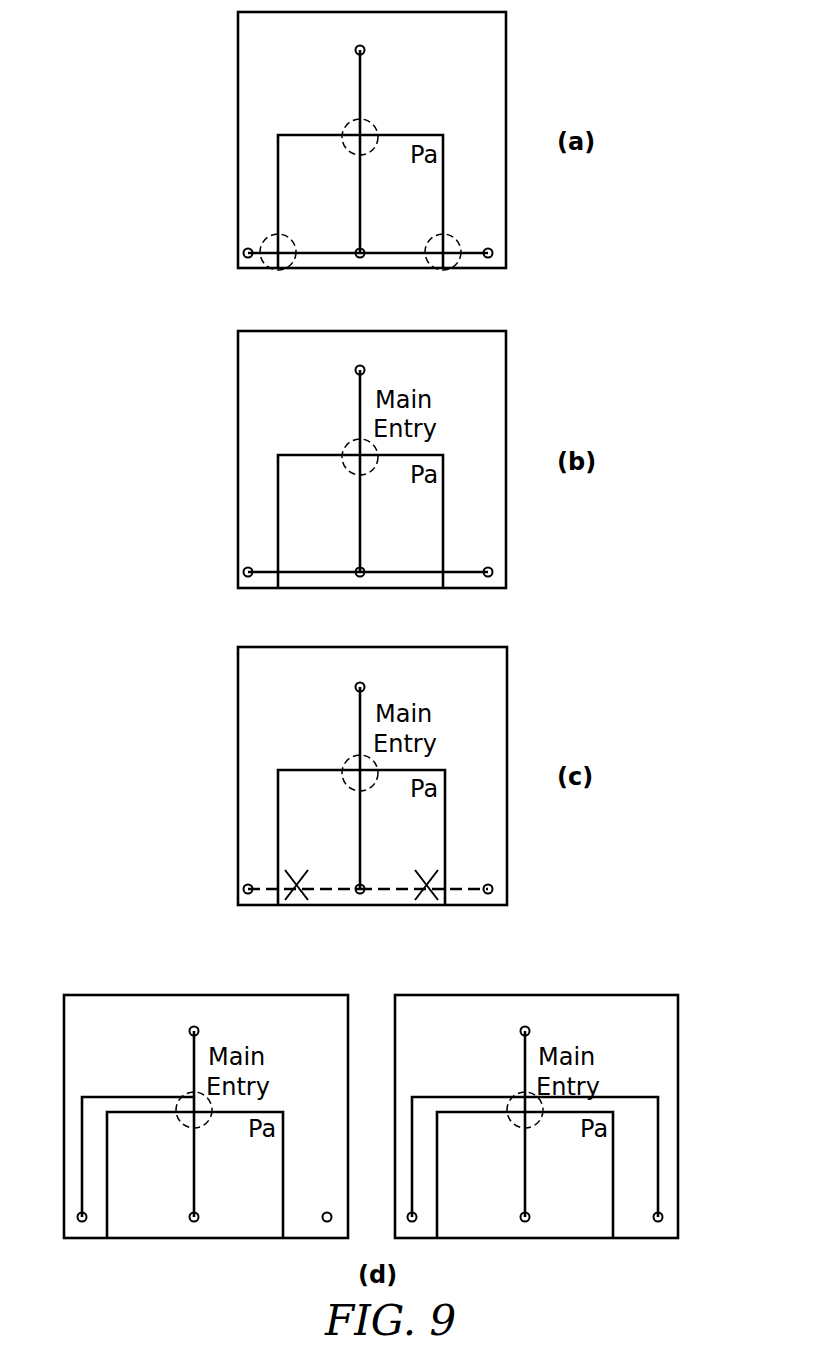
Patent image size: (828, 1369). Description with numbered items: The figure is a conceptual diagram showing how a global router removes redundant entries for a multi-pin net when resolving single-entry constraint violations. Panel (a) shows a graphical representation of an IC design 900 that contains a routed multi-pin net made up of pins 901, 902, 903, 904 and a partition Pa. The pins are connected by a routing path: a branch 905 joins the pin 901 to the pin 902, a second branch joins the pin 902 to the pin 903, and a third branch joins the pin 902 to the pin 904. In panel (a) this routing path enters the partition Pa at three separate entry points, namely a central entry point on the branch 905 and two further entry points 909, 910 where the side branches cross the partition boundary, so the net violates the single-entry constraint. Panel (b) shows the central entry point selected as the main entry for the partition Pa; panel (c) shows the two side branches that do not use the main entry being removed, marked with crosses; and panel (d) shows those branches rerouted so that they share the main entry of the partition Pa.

The IC design 900 is at (238, 47).
The pin 901 is at (364, 51).
The pin 902 is at (365, 258).
The pin 903 is at (489, 258).
The pin 904 is at (250, 258).
The branch 905 is at (362, 89).
The entry point 909 is at (271, 235).
The entry point 910 is at (453, 239).